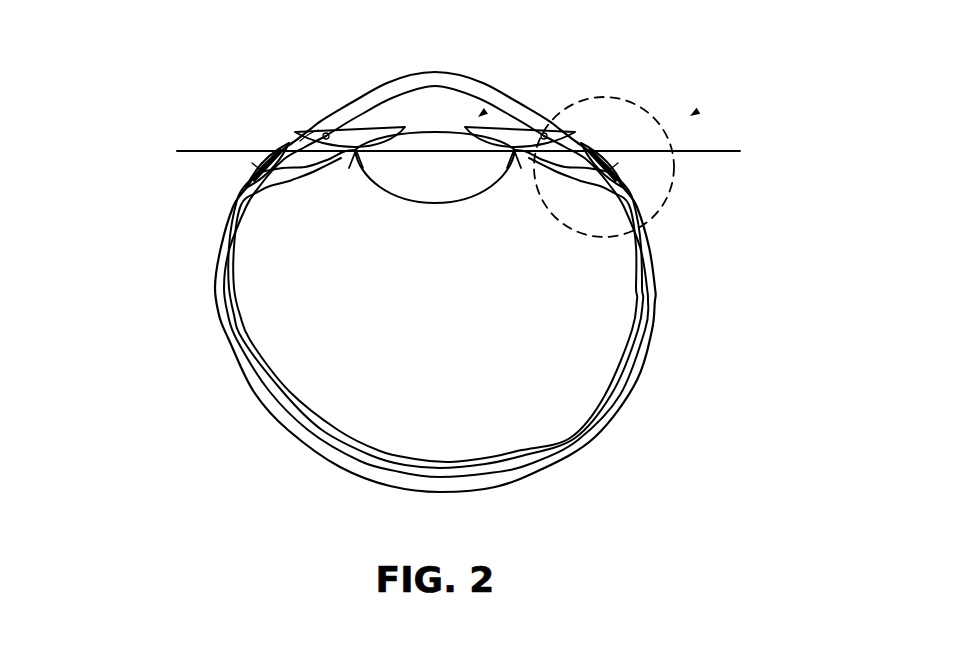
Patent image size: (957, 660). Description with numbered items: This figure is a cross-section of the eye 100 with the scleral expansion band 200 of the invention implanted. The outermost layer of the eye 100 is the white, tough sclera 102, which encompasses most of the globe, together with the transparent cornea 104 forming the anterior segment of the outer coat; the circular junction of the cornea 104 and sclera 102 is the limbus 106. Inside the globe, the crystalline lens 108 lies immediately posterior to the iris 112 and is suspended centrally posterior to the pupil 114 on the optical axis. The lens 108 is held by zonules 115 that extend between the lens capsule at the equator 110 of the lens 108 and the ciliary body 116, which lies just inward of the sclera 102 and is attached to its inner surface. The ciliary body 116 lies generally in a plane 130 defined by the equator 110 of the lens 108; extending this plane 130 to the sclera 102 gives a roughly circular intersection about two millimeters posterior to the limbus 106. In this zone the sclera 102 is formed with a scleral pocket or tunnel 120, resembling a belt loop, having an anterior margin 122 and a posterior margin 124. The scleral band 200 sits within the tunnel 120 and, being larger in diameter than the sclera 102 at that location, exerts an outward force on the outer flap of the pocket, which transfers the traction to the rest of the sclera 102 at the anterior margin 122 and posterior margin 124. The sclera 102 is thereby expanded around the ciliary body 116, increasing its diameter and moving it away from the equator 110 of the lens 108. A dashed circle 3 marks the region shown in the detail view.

The dashed circle 3 is at (598, 97).
The eye 100 is at (692, 115).
The sclera 102 is at (213, 288).
The cornea 104 is at (401, 79).
The limbus 106 is at (307, 130).
The crystalline lens 108 is at (447, 131).
The equator of the lens 110 is at (314, 130).
The iris 112 is at (330, 133).
The pupil 114 is at (480, 115).
The zonules 115 is at (357, 165).
The ciliary body 116 is at (326, 172).
The scleral pocket or tunnel 120 is at (247, 170).
The anterior margin 122 is at (276, 143).
The posterior margin 124 is at (243, 183).
The plane 130 is at (706, 151).
The scleral expansion band 200 is at (252, 163).